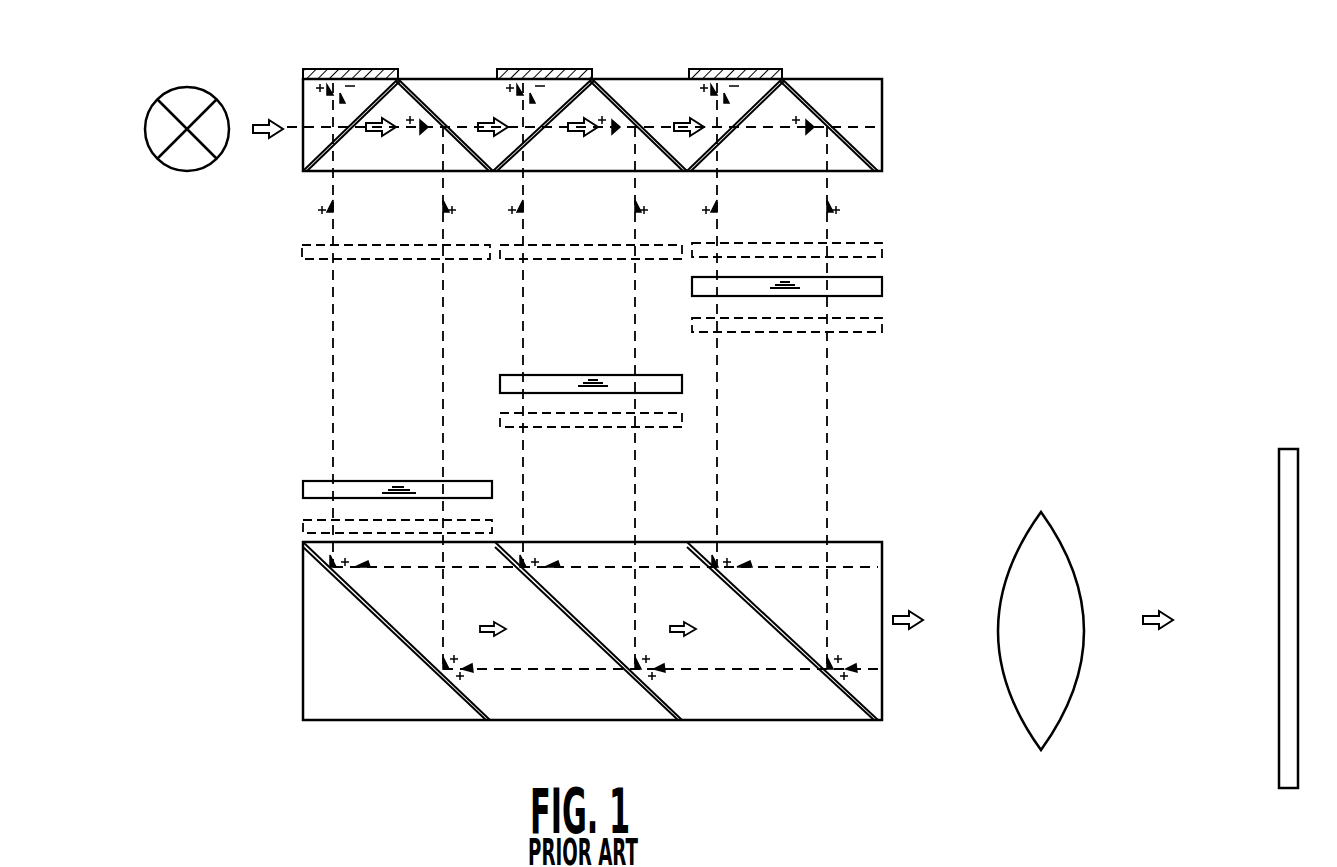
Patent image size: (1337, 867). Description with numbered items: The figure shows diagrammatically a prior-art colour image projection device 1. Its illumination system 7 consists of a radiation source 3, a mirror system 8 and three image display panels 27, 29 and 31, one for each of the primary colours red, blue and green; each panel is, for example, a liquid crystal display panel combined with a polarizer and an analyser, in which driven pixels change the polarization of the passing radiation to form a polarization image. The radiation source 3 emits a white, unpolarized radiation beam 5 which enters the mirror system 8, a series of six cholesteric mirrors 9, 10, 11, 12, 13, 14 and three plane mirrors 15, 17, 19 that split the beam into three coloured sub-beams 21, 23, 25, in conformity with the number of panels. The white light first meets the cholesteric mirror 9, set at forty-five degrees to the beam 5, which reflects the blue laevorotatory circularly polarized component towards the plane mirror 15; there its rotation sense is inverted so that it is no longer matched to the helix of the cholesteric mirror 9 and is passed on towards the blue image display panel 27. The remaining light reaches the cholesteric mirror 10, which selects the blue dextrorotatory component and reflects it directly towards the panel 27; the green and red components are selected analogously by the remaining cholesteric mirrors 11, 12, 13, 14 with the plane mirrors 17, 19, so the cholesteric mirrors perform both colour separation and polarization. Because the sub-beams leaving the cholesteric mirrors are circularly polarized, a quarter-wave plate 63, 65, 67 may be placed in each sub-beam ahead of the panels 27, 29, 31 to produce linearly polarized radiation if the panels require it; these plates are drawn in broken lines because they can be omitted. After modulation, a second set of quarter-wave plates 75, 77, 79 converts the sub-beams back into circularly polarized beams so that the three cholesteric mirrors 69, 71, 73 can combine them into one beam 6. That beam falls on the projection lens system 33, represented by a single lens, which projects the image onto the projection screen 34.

The colour image projection device 1 is at (182, 735).
The radiation source 3 is at (150, 147).
The radiation beam 5 is at (260, 118).
The beam 6 is at (918, 618).
The illumination system 7 is at (173, 302).
The mirror system 8 is at (895, 118).
The first cholesteric mirror 9 is at (308, 175).
The second cholesteric mirror 10 is at (480, 172).
The cholesteric mirror 11 is at (515, 165).
The cholesteric mirror 12 is at (670, 173).
The cholesteric mirror 13 is at (700, 158).
The cholesteric mirror 14 is at (872, 173).
The plane mirror 15 is at (378, 68).
The plane mirror 17 is at (575, 68).
The plane mirror 19 is at (765, 68).
The coloured sub-beam 21 is at (355, 294).
The coloured sub-beam 23 is at (546, 309).
The coloured sub-beam 25 is at (730, 262).
The blue image display panel 27 is at (310, 490).
The image display panel 29 is at (506, 386).
The image display panel 31 is at (705, 288).
The projection lens system 33 is at (1044, 750).
The projection screen 34 is at (1280, 788).
The λ/4 plate 63 is at (302, 250).
The λ/4 plate 65 is at (520, 260).
The λ/4 plate 67 is at (882, 243).
The cholesteric mirror 69 is at (488, 722).
The cholesteric mirror 71 is at (678, 722).
The cholesteric mirror 73 is at (866, 722).
The λ/4 plate 75 is at (310, 527).
The λ/4 plate 77 is at (510, 421).
The λ/4 plate 79 is at (705, 326).